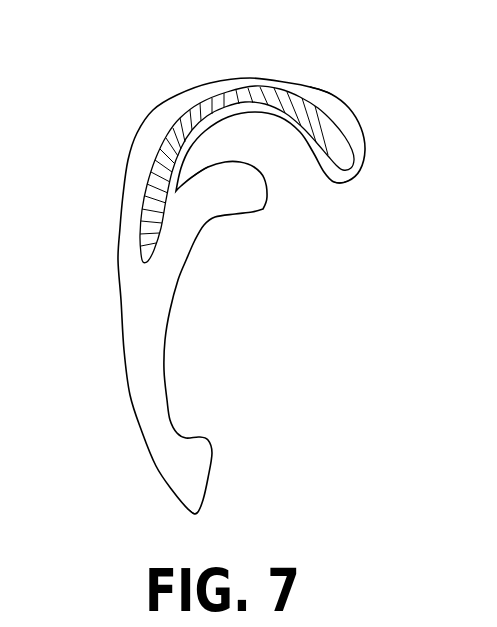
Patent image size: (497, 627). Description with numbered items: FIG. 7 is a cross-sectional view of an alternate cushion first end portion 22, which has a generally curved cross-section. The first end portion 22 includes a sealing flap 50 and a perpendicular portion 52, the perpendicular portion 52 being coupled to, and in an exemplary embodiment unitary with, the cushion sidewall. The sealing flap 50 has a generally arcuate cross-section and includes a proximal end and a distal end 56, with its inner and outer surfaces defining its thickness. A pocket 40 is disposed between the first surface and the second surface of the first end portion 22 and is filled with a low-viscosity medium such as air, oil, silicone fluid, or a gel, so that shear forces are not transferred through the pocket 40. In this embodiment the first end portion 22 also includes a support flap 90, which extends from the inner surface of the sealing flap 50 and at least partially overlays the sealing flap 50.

The first end portion 22 is at (135, 330).
The pocket 40 is at (310, 110).
The sealing flap 50 is at (340, 183).
The perpendicular portion 52 is at (150, 460).
The distal end 56 is at (365, 153).
The support flap 90 is at (263, 210).